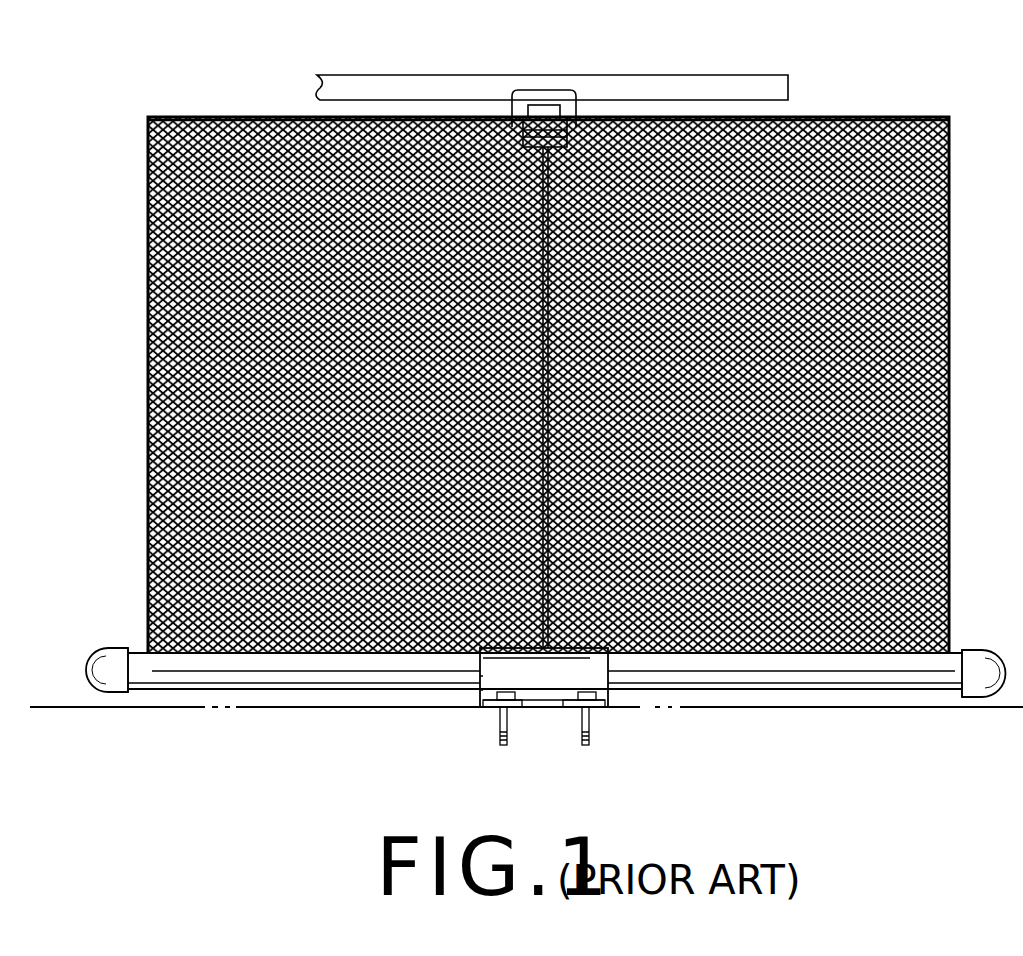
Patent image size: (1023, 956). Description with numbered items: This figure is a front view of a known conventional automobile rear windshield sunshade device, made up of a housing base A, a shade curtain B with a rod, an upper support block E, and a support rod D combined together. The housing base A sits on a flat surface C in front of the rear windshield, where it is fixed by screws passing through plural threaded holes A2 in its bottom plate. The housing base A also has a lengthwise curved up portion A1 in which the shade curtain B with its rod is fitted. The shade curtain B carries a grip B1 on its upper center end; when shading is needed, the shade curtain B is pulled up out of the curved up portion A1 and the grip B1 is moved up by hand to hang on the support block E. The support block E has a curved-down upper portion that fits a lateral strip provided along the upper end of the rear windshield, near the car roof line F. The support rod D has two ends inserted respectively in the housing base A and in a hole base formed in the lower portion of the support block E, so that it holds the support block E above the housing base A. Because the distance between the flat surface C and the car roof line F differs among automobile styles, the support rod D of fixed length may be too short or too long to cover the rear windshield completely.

The housing base A is at (530, 680).
The lengthwise curved up portion A1 is at (478, 676).
The threaded holes A2 is at (594, 715).
The shade curtain B is at (955, 318).
The grip B1 is at (543, 125).
The flat surface C is at (970, 710).
The support rod D is at (556, 153).
The upper support block E is at (523, 98).
The car roof line F is at (630, 86).